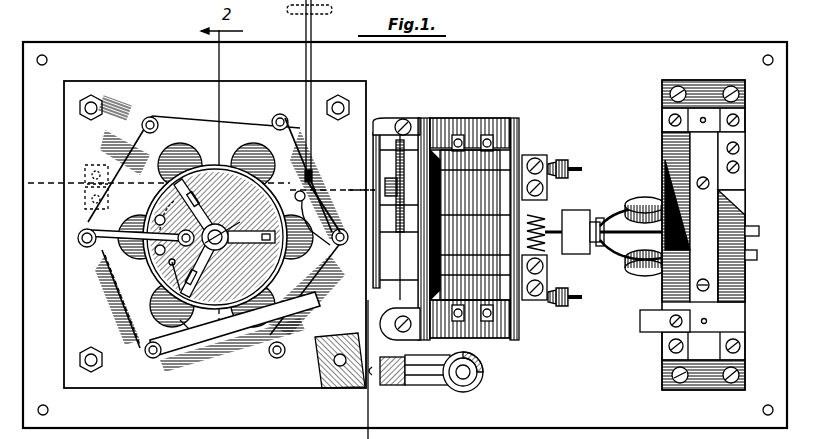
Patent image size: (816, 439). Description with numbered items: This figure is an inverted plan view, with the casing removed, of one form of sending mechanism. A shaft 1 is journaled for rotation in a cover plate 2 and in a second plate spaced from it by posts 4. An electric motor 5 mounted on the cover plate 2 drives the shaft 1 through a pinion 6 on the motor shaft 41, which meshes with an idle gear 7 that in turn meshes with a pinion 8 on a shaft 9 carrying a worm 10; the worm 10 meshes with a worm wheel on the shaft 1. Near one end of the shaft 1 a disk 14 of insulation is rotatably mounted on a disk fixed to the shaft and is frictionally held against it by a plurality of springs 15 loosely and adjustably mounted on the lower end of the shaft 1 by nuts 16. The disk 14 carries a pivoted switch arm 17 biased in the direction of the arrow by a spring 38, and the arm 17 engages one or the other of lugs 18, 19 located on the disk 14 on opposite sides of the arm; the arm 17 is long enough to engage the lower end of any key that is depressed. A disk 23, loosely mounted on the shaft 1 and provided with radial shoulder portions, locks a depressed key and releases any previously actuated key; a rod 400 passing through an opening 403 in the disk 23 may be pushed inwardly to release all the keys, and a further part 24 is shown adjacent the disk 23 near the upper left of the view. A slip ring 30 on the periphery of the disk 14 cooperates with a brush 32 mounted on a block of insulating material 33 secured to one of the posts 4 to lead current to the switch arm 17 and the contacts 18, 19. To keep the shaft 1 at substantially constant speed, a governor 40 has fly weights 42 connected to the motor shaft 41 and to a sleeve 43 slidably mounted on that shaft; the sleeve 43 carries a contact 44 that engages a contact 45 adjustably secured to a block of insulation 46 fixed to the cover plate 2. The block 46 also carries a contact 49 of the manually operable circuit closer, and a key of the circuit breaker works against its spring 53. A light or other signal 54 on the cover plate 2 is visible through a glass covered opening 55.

The shaft 1 is at (221, 229).
The cover plate 2 is at (405, 235).
The posts 4 is at (368, 408).
The electric motor 5 is at (490, 180).
The pinion 6 is at (400, 236).
The idle gear 7 is at (407, 217).
The pinion 8 is at (390, 200).
The shaft 9 is at (340, 190).
The worm 10 is at (207, 168).
The disk of insulation 14 is at (262, 258).
The springs 15 is at (283, 220).
The nuts 16 is at (222, 247).
The switch arm 17 is at (136, 244).
The lug 18 is at (150, 212).
The lug 19 is at (160, 262).
The disk 23 is at (302, 173).
The pivot 24 is at (150, 117).
The slip ring 30 is at (222, 170).
The brush 32 is at (232, 332).
The block of insulating material 33 is at (330, 345).
The spring 38 is at (178, 331).
The governor 40 is at (625, 256).
The motor shaft 41 is at (618, 222).
The fly weights 42 is at (647, 276).
The sleeve 43 is at (703, 248).
The contact 44 is at (750, 257).
The contact 45 is at (756, 228).
The block of insulation 46 is at (742, 318).
The contact 49 is at (703, 124).
The spring 53 is at (678, 325).
The signal 54 is at (468, 380).
The glass covered opening 55 is at (480, 362).
The rod 400 is at (312, 62).
The opening 403 is at (328, 242).